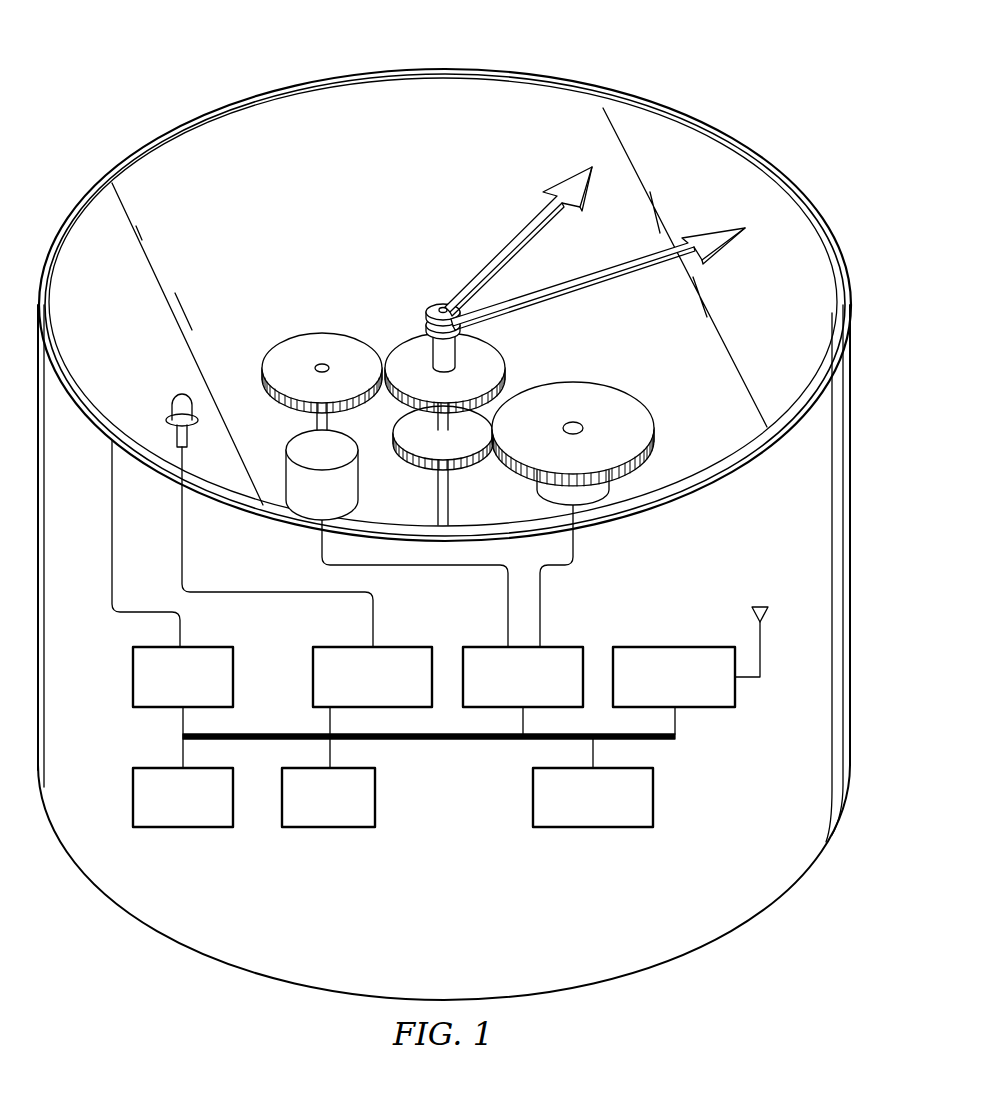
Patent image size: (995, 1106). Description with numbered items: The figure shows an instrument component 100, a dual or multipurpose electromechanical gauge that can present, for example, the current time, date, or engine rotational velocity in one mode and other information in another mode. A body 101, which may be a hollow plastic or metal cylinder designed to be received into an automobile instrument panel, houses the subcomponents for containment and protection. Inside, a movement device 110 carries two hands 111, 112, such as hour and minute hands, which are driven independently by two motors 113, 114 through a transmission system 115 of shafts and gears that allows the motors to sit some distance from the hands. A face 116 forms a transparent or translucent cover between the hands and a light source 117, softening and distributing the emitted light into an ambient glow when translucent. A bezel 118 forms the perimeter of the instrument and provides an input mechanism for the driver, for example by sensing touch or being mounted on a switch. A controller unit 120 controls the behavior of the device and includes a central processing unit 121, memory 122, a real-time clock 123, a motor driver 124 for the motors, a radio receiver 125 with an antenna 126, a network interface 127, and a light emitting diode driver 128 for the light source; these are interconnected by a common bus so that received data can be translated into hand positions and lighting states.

The instrument component 100 is at (279, 64).
The body 101 is at (678, 958).
The movement device 110 is at (395, 302).
The hand 111 is at (500, 250).
The hand 112 is at (594, 272).
The motor 113 is at (358, 482).
The motor 114 is at (540, 485).
The transmission system 115 is at (568, 372).
The face 116 is at (758, 187).
The light source 117 is at (172, 402).
The bezel 118 is at (679, 118).
The controller unit 120 is at (482, 850).
The central processing unit 121 is at (132, 676).
The memory 122 is at (132, 797).
The real-time clock 123 is at (376, 797).
The motor driver 124 is at (566, 645).
The radio receiver 125 is at (672, 645).
The antenna 126 is at (764, 604).
The network interface 127 is at (656, 797).
The light emitting diode driver 128 is at (400, 645).